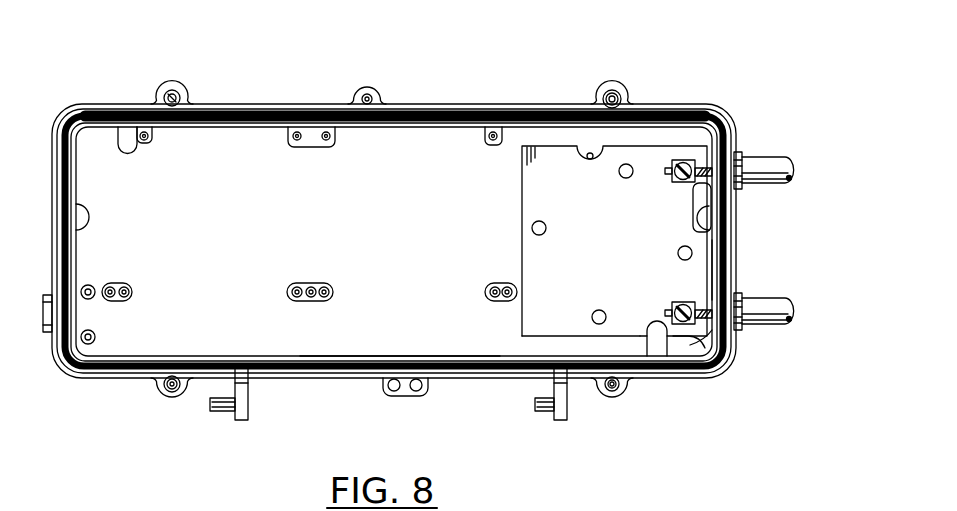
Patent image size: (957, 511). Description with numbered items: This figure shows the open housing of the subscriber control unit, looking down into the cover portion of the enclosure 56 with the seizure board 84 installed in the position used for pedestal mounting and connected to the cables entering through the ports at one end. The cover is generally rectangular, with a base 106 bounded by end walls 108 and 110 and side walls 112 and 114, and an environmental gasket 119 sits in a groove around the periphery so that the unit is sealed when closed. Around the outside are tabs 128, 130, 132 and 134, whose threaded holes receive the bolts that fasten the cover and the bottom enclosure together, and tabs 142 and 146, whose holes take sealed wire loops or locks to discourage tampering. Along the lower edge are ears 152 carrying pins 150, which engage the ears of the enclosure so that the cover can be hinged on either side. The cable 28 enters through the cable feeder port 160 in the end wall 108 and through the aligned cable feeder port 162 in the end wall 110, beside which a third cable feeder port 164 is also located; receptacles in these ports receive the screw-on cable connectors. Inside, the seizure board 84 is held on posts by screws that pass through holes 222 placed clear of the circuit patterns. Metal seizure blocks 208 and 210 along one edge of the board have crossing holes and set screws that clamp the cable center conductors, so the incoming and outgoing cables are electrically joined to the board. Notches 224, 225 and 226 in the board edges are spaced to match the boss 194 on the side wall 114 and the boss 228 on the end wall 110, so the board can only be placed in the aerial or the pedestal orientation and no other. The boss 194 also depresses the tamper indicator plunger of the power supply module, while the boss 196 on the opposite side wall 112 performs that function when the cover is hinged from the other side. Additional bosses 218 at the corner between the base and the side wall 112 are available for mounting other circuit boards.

The enclosure 56 is at (82, 92).
The cable 28 is at (756, 155).
The seizure board 84 is at (522, 210).
The base 106 is at (223, 147).
The end wall 108 is at (86, 222).
The end wall 110 is at (706, 280).
The side wall 112 is at (417, 130).
The side wall 114 is at (380, 357).
The environmental gasket 119 is at (478, 110).
The tab 128 is at (180, 84).
The tab 130 is at (625, 88).
The tab 132 is at (158, 398).
The tab 134 is at (625, 397).
The tab 142 is at (377, 87).
The tab 146 is at (425, 393).
The pin 150 is at (222, 406).
The ear 152 is at (250, 405).
The cable feeder port 160 is at (47, 337).
The cable feeder port 162 is at (743, 333).
The cable feeder port 164 is at (738, 189).
The boss 194 is at (657, 338).
The boss 196 is at (133, 153).
The seizure block 208 is at (715, 350).
The seizure block 210 is at (680, 160).
The boss 218 is at (323, 147).
The hole 222 is at (678, 250).
The notch 224 is at (660, 327).
The notch 225 is at (590, 160).
The notch 226 is at (694, 204).
The boss 228 is at (708, 218).